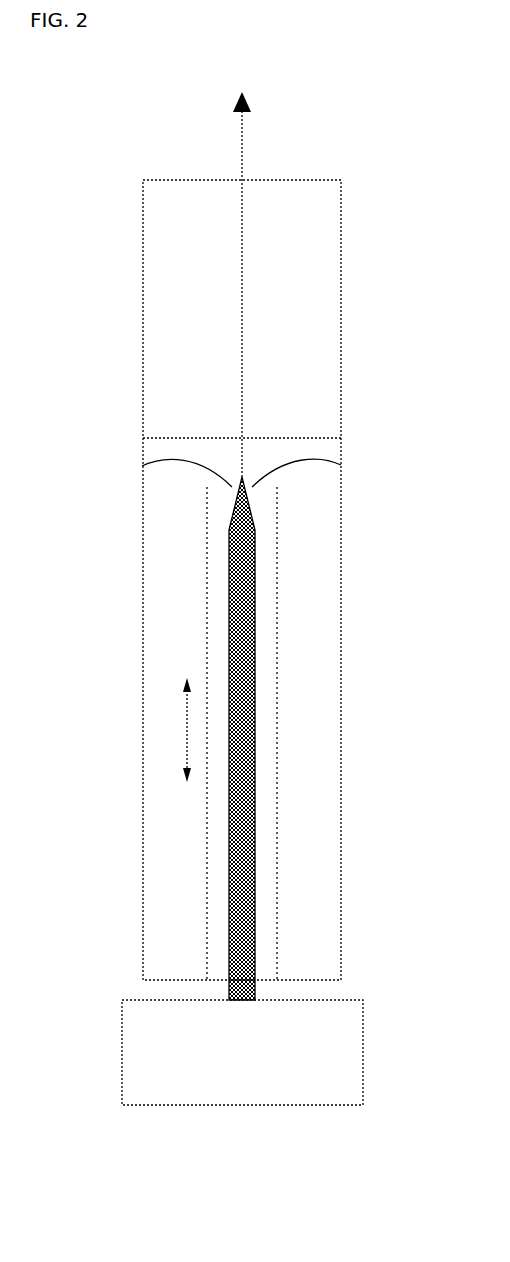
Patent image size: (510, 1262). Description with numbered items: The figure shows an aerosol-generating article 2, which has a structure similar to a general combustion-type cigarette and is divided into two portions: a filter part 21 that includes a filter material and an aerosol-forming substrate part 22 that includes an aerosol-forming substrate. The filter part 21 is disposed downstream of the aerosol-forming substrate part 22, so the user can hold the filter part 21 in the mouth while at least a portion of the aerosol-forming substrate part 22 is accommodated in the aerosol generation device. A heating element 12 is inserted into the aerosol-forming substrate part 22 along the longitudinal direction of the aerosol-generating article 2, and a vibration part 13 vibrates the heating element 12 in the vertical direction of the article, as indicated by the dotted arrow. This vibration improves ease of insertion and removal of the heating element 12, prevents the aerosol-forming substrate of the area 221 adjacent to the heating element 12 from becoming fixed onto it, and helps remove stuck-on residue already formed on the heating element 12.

The aerosol-generating article 2 is at (108, 150).
The filter part 21 is at (166, 309).
The aerosol-forming substrate part 22 is at (142, 553).
The area adjacent to the heating element 221 is at (142, 466).
The heating element 12 is at (255, 755).
The vibration part 13 is at (122, 1050).